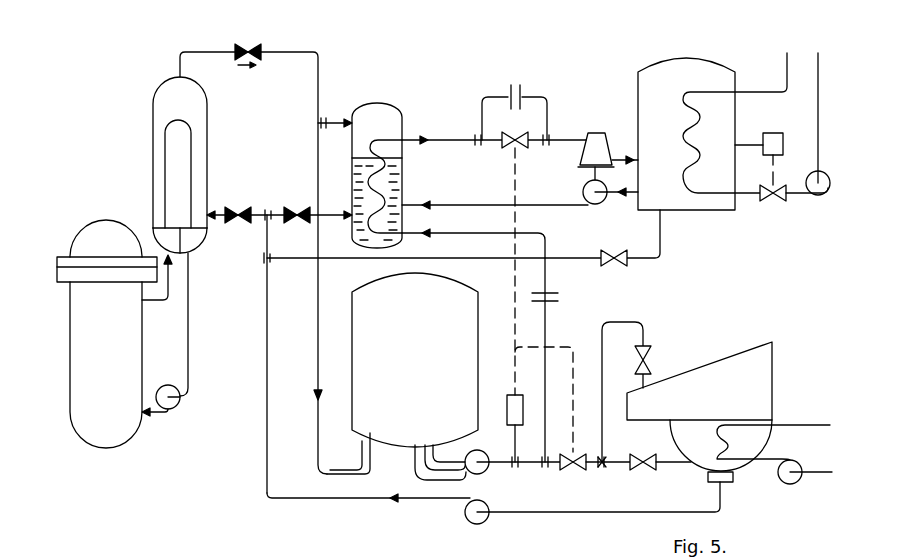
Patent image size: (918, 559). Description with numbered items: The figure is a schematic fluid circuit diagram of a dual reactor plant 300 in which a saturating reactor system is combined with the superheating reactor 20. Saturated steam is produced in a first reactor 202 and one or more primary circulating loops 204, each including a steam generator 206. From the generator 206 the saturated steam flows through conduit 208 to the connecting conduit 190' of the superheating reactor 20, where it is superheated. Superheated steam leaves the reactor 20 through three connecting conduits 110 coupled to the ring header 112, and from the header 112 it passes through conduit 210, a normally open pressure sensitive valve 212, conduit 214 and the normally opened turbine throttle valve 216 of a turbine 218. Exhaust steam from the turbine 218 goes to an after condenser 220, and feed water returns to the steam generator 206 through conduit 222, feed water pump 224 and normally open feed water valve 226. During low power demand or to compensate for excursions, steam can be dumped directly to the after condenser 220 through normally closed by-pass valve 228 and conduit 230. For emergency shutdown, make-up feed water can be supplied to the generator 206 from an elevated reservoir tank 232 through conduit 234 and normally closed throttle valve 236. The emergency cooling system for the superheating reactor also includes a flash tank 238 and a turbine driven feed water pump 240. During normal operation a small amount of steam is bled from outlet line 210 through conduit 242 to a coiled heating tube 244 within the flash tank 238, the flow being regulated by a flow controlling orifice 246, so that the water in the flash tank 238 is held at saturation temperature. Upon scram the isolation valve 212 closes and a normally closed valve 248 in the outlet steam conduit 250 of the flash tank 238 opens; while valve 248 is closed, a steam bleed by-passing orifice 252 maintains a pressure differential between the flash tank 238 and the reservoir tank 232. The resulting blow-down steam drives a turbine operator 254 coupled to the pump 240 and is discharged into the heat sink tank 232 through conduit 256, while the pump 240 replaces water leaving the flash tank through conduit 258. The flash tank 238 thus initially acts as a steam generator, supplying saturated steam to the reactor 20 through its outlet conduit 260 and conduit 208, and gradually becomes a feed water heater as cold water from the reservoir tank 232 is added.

The superheating reactor 20 is at (503, 285).
The connecting conduits 110 is at (416, 470).
The ring header 112 is at (493, 470).
The connecting conduit 190' is at (340, 465).
The first reactor 202 is at (150, 357).
The primary circulating loop 204 is at (206, 336).
The steam generator 206 is at (207, 148).
The conduit 208 is at (318, 317).
The conduit 210 is at (527, 466).
The pressure sensitive valve 212 is at (593, 475).
The conduit 214 is at (621, 320).
The turbine throttle valve 216 is at (652, 362).
The turbine 218 is at (772, 365).
The after condenser 220 is at (751, 461).
The conduit 222 is at (267, 432).
The feed water pump 224 is at (465, 512).
The feed water valve 226 is at (238, 212).
The by-pass valve 228 is at (650, 467).
The conduit 230 is at (672, 463).
The reservoir tank 232 is at (648, 62).
The conduit 234 is at (291, 261).
The throttle valve 236 is at (615, 250).
The flash tank 238 is at (376, 105).
The turbine driven feed water pump 240 is at (582, 187).
The conduit 242 is at (548, 326).
The coiled heating tube 244 is at (380, 190).
The flow controlling orifice 246 is at (556, 298).
The valve 248 is at (522, 134).
The outlet steam conduit 250 is at (566, 138).
The steam bleed by-passing orifice 252 is at (510, 90).
The turbine operator 254 is at (588, 132).
The conduit 256 is at (626, 161).
The conduit 258 is at (443, 204).
The flash tank outlet conduit 260 is at (348, 123).
The system 300 is at (483, 554).